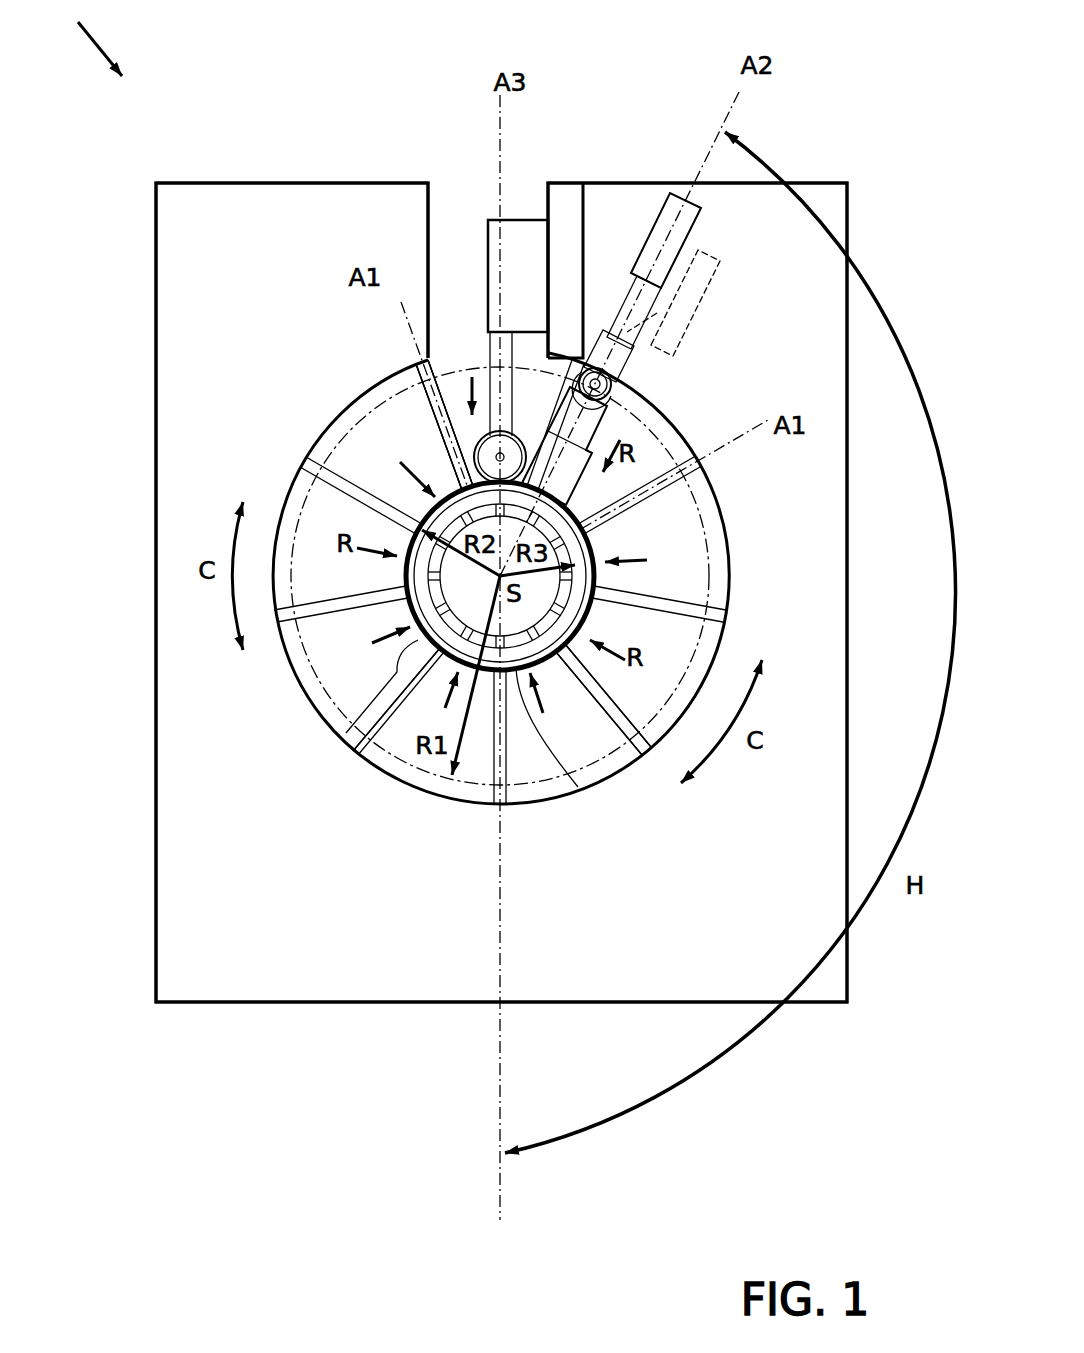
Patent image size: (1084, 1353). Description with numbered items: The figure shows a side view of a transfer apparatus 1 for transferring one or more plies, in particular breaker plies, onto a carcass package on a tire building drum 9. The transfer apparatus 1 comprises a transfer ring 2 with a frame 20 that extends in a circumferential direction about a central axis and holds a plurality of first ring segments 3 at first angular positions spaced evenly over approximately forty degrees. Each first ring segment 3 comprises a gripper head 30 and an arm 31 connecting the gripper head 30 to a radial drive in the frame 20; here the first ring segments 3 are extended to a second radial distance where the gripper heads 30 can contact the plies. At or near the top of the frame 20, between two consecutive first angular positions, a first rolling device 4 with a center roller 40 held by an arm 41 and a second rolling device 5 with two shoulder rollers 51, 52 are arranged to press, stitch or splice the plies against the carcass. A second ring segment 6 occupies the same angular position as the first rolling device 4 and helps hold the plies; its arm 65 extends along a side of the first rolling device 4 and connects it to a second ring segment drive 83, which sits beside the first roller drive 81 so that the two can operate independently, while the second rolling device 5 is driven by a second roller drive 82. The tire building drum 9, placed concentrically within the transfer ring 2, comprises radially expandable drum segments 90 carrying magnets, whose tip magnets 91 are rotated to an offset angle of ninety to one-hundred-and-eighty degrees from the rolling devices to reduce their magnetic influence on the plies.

The transfer apparatus 1 is at (95, 38).
The transfer ring 2 is at (165, 838).
The frame 20 is at (200, 898).
The first ring segment 3 is at (345, 487).
The first rolling device 4 is at (560, 355).
The second rolling device 5 is at (488, 358).
The second ring segment 6 is at (546, 455).
The tire building drum 9 is at (407, 577).
The gripper head 30 is at (362, 712).
The arm 31 is at (355, 750).
The center roller 40 is at (570, 360).
The arm 41 is at (647, 300).
The shoulder roller 51 is at (428, 392).
The shoulder roller 52 is at (444, 425).
The arm 65 is at (627, 403).
The first roller drive 81 is at (693, 220).
The slider block 82 is at (495, 225).
The second ring segment drive 83 is at (688, 318).
The drum segment 90 is at (628, 740).
The tip magnet 91 is at (578, 790).